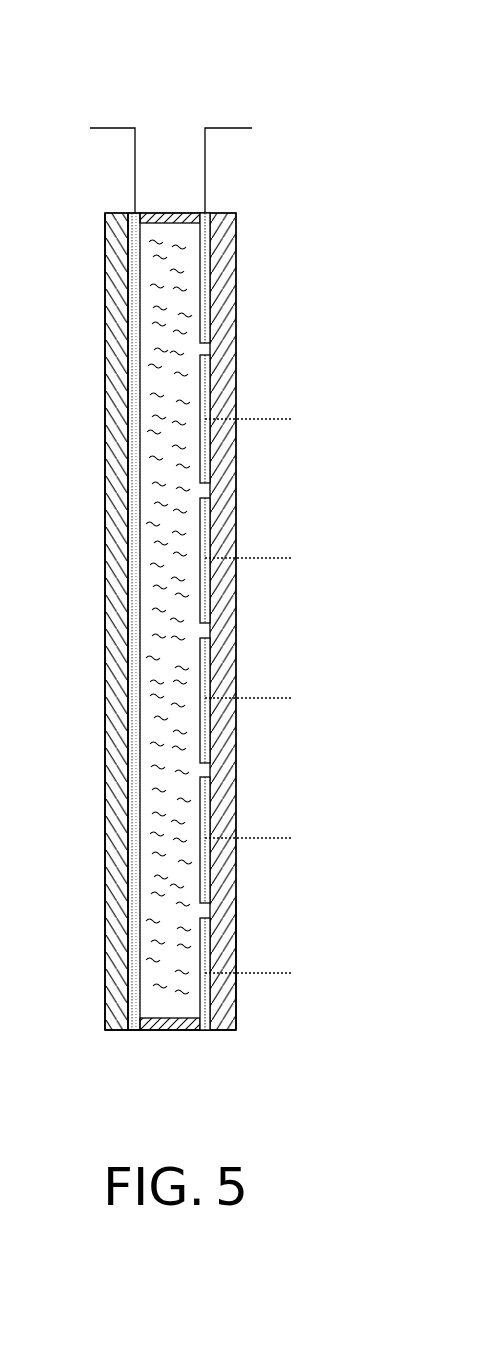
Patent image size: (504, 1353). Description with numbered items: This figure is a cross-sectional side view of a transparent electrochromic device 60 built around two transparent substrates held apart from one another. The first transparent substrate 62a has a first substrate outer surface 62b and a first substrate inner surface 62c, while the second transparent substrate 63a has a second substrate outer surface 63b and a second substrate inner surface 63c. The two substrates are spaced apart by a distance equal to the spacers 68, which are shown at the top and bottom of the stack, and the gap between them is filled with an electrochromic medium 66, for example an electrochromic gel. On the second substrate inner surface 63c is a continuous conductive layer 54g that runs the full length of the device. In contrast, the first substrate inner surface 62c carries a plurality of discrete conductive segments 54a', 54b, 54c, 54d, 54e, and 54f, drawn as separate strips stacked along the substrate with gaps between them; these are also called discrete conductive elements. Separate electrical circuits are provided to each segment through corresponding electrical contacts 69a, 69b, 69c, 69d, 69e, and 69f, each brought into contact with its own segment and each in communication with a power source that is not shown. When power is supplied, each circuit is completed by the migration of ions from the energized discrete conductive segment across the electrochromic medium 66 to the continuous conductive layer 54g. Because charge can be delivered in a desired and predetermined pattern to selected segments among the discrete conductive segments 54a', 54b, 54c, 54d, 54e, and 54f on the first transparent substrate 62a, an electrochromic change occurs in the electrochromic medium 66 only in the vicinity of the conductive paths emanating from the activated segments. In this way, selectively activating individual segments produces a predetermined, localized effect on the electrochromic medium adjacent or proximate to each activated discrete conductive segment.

The electrochromic device 60 is at (364, 276).
The discrete conductive segment 54a' is at (273, 278).
The discrete conductive segment 54b is at (210, 362).
The discrete conductive segment 54c is at (210, 514).
The discrete conductive segment 54d is at (210, 654).
The discrete conductive segment 54e is at (210, 794).
The discrete conductive segment 54f is at (210, 934).
The continuous conductive layer 54g is at (133, 298).
The first transparent substrate 62a is at (232, 1010).
The first substrate outer surface 62b is at (237, 228).
The first substrate inner surface 62c is at (220, 1032).
The second transparent substrate 63a is at (105, 600).
The second substrate outer surface 63b is at (105, 395).
The second substrate inner surface 63c is at (130, 235).
The electrochromic medium 66 is at (162, 943).
The spacers 68 is at (165, 212).
The electrical contact 69a is at (232, 128).
The electrical contact 69b is at (104, 128).
The electrical contact 69c is at (272, 558).
The electrical contact 69d is at (268, 698).
The electrical contact 69e is at (270, 838).
The electrical contact 69f is at (272, 973).